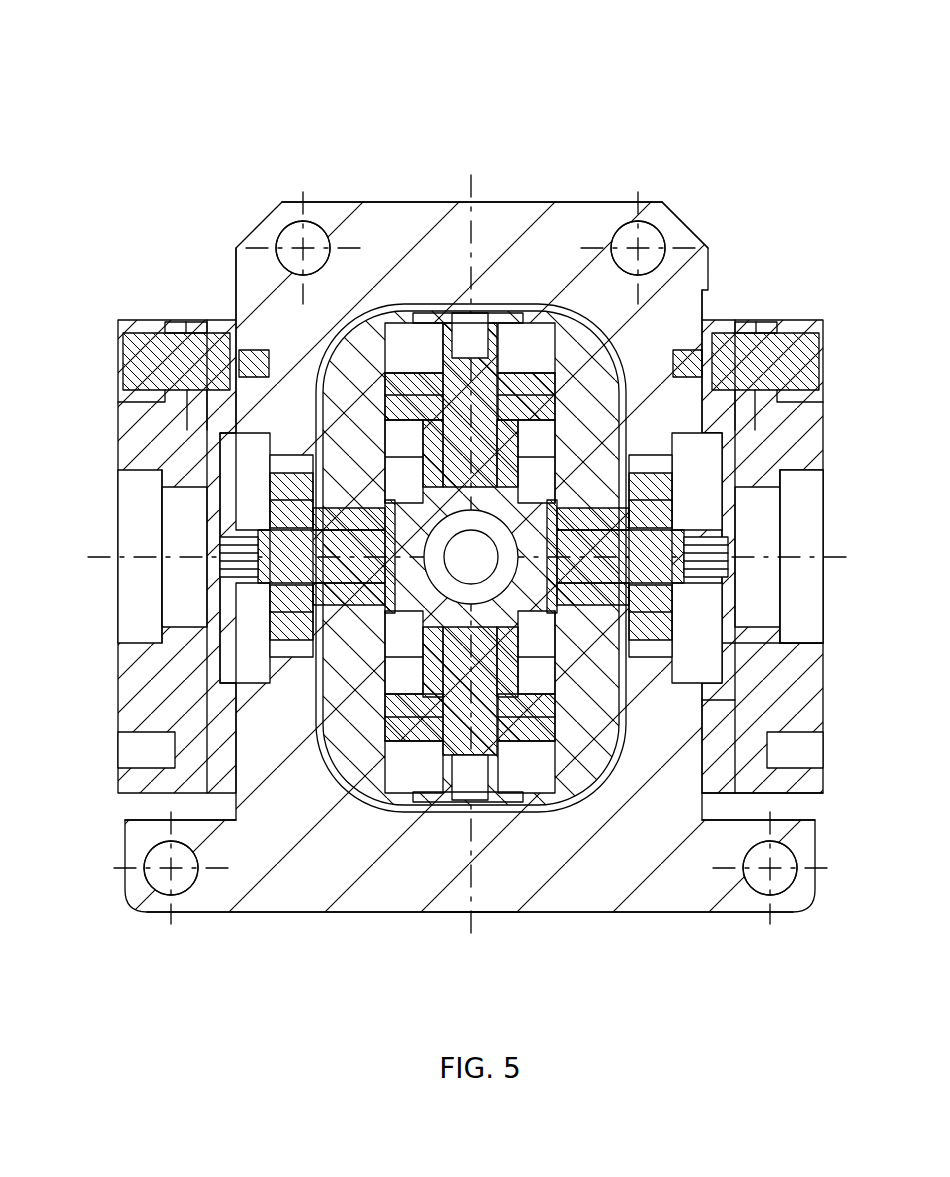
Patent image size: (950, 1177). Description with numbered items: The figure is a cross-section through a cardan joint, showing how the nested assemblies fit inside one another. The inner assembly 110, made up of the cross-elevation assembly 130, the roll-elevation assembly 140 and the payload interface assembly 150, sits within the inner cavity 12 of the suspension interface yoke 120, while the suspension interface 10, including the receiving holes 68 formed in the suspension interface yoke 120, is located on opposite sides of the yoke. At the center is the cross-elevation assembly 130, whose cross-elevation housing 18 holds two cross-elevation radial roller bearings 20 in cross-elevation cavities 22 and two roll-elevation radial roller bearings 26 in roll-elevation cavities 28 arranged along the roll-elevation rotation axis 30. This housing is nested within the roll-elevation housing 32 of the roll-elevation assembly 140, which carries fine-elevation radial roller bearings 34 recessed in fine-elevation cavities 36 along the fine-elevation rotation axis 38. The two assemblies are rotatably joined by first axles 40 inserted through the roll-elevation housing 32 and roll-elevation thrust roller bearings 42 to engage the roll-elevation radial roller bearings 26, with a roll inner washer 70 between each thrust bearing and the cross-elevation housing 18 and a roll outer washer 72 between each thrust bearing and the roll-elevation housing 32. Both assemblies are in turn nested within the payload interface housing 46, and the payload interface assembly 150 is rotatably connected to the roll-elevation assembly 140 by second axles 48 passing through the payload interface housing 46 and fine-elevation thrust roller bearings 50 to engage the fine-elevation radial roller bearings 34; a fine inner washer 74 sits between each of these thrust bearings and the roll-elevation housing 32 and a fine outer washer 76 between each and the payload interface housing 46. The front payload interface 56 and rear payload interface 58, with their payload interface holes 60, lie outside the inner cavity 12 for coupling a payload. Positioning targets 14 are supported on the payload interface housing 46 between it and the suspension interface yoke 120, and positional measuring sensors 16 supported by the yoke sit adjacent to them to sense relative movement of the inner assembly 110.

The suspension interface 10 is at (803, 477).
The inner cavity 12 is at (730, 760).
The positioning targets 14 is at (745, 330).
The positional measuring sensors 16 is at (815, 325).
The cross-elevation housing 18 is at (367, 700).
The cross-elevation radial roller bearings 20 is at (415, 400).
The cross-elevation cavities 22 is at (338, 418).
The roll-elevation radial roller bearings 26 is at (470, 440).
The roll-elevation cavities 28 is at (640, 455).
The roll-elevation rotation axis 30 is at (477, 927).
The roll-elevation housing 32 is at (345, 405).
The fine-elevation radial roller bearings 34 is at (268, 500).
The fine-elevation cavities 36 is at (290, 455).
The fine-elevation rotation axis 38 is at (787, 557).
The first axles 40 is at (432, 400).
The roll-elevation thrust roller bearings 42 is at (578, 365).
The payload interface housing 46 is at (687, 780).
The second axles 48 is at (245, 535).
The fine-elevation thrust roller bearings 50 is at (222, 578).
The front payload interface 56 is at (290, 893).
The rear payload interface 58 is at (660, 205).
The payload interface holes 60 is at (290, 243).
The receiving holes 68 is at (813, 524).
The roll inner washer 70 is at (510, 420).
The roll outer washer 72 is at (557, 380).
The fine inner washer 74 is at (277, 592).
The fine outer washer 76 is at (300, 600).
The inner assembly 110 is at (268, 204).
The suspension interface yoke 120 is at (800, 712).
The cross-elevation assembly 130 is at (393, 752).
The roll-elevation assembly 140 is at (598, 776).
The payload interface assembly 150 is at (442, 917).